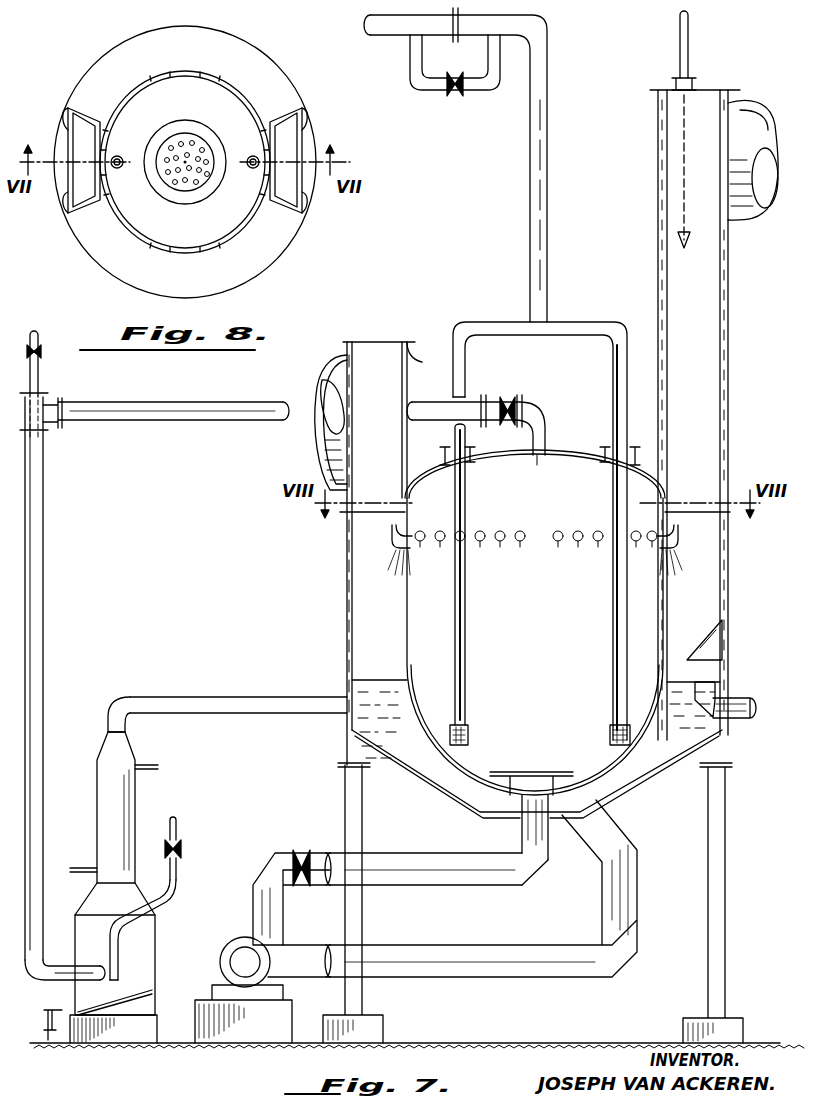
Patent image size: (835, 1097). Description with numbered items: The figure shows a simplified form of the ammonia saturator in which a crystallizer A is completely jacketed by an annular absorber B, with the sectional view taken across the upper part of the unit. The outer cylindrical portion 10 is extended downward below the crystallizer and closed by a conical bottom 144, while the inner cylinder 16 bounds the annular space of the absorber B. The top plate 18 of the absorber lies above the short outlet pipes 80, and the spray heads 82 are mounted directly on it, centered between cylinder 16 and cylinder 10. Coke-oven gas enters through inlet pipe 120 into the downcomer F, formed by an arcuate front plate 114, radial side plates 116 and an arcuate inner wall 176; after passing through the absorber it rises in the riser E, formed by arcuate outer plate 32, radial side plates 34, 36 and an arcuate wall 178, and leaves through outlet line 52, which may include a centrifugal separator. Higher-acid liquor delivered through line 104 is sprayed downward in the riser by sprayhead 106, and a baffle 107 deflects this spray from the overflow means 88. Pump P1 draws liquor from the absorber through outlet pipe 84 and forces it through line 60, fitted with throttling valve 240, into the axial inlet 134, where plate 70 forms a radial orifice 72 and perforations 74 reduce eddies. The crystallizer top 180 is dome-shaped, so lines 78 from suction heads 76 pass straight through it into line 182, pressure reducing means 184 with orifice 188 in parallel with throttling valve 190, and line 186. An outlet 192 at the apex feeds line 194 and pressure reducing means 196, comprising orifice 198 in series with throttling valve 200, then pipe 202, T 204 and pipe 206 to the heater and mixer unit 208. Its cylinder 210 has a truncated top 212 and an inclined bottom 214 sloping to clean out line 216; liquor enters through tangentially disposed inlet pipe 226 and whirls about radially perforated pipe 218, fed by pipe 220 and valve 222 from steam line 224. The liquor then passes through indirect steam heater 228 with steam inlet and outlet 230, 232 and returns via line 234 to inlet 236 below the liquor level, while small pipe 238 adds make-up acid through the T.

In FIG. 8, the cylindrical portion 10 is at (128, 228).
In FIG. 7, the cylinder 16 is at (347, 583).
In FIG. 8, the top plate 18 is at (215, 50).
In FIG. 7, the top plate 18 is at (340, 515).
In FIG. 8, the arcuate outer plate 32 is at (305, 132).
In FIG. 7, the arcuate outer plate 32 is at (728, 381).
In FIG. 8, the radial side plate 34 is at (290, 108).
In FIG. 7, the radial side plate 34 is at (700, 409).
In FIG. 8, the radial side plate 36 is at (302, 213).
In FIG. 7, the outlet line 52 is at (752, 122).
In FIG. 7, the line 60 is at (398, 868).
In FIG. 8, the plate 70 is at (188, 140).
In FIG. 7, the plate 70 is at (530, 770).
In FIG. 8, the radial orifice 72 is at (205, 148).
In FIG. 7, the perforations 74 is at (575, 786).
In FIG. 7, the suction head 76 is at (468, 730).
In FIG. 8, the lines 78 is at (117, 156).
In FIG. 7, the lines 78 is at (466, 581).
In FIG. 7, the pipes 80 is at (490, 448).
In FIG. 7, the spray heads 82 is at (395, 548).
In FIG. 7, the outlet pipe 84 is at (552, 979).
In FIG. 7, the overflow means 88 is at (722, 692).
In FIG. 7, the line 104 is at (688, 56).
In FIG. 7, the sprayhead 106 is at (675, 244).
In FIG. 7, the baffle 107 is at (722, 641).
In FIG. 8, the arcuate front plate 114 is at (68, 128).
In FIG. 7, the arcuate front plate 114 is at (348, 342).
In FIG. 8, the radial side plates 116 is at (68, 108).
In FIG. 7, the radial side plates 116 is at (385, 332).
In FIG. 7, the inlet pipe 120 is at (330, 352).
In FIG. 7, the axial inlet 134 is at (522, 831).
In FIG. 7, the conical bottom 144 is at (644, 780).
In FIG. 7, the arcuate inner wall 176 is at (415, 360).
In FIG. 7, the arcuate wall 178 is at (658, 286).
In FIG. 7, the top 180 is at (560, 455).
In FIG. 7, the line 182 is at (530, 201).
In FIG. 7, the pressure reducing means 184 is at (548, 28).
In FIG. 7, the line 186 is at (392, 30).
In FIG. 7, the orifice 188 is at (455, 62).
In FIG. 7, the throttling valve 190 is at (455, 92).
In FIG. 7, the outlet 192 is at (540, 455).
In FIG. 7, the line 194 is at (546, 418).
In FIG. 7, the pressure reducing means 196 is at (515, 395).
In FIG. 7, the orifice 198 is at (484, 394).
In FIG. 7, the throttling valve 200 is at (512, 397).
In FIG. 7, the pipe 202 is at (250, 412).
In FIG. 7, the T 204 is at (50, 400).
In FIG. 7, the pipe 206 is at (45, 519).
In FIG. 7, the heater and mixer unit 208 is at (88, 825).
In FIG. 7, the cylinder 210 is at (156, 951).
In FIG. 7, the truncated top 212 is at (156, 920).
In FIG. 7, the inclined bottom 214 is at (115, 1010).
In FIG. 7, the clean out line 216 is at (56, 1042).
In FIG. 7, the radially perforated pipe 218 is at (115, 973).
In FIG. 7, the pipe 220 is at (135, 911).
In FIG. 7, the valve 222 is at (185, 849).
In FIG. 7, the steam line 224 is at (180, 830).
In FIG. 7, the tangentially disposed inlet pipe 226 is at (58, 986).
In FIG. 7, the indirect steam heater 228 is at (135, 791).
In FIG. 7, the steam inlet 230 is at (80, 868).
In FIG. 7, the steam outlet 232 is at (156, 765).
In FIG. 7, the line 234 is at (168, 708).
In FIG. 7, the inlet 236 is at (345, 703).
In FIG. 7, the small pipe 238 is at (44, 376).
In FIG. 7, the throttling valve 240 is at (302, 850).
In FIG. 7, the crystallizer A is at (415, 656).
In FIG. 7, the absorber B is at (358, 617).
In FIG. 7, the riser E is at (728, 301).
In FIG. 7, the downcomer F is at (400, 342).
In FIG. 7, the pump P1 is at (238, 948).